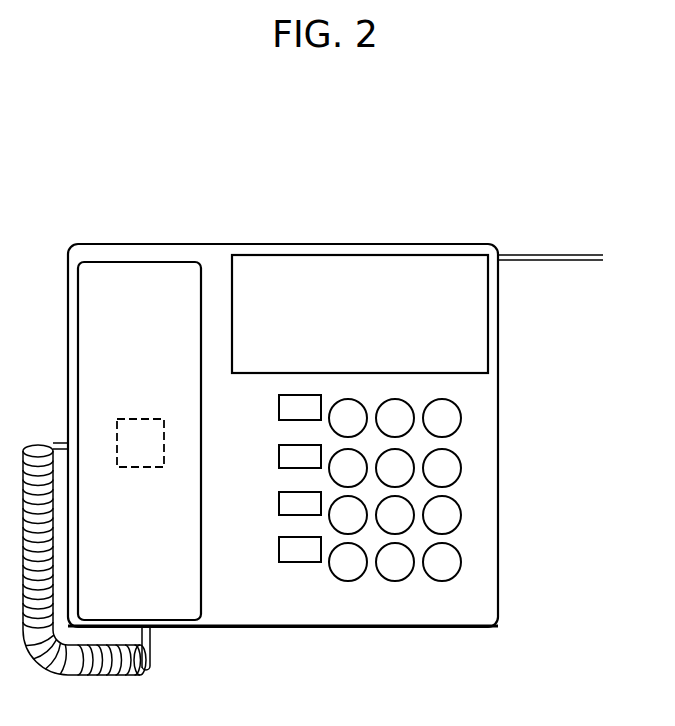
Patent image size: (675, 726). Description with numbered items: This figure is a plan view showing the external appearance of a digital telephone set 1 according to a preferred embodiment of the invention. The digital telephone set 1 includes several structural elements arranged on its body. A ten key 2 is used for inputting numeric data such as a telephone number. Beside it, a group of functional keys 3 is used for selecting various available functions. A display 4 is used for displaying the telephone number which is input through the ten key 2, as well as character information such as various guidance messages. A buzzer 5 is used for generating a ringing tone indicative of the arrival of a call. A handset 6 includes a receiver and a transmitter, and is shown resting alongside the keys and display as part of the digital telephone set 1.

The digital telephone set 1 is at (143, 237).
The ten key 2 is at (413, 398).
The group of functional keys 3 is at (273, 393).
The display 4 is at (445, 253).
The buzzer 5 is at (160, 419).
The handset 6 is at (201, 405).